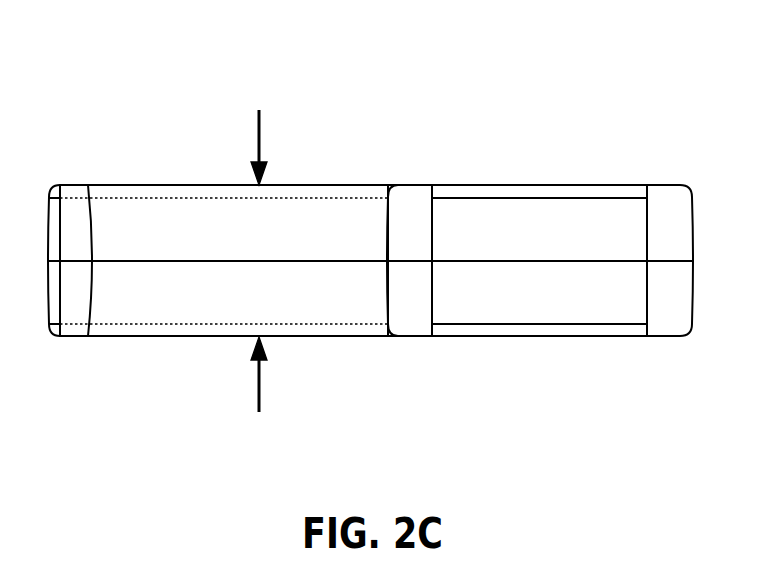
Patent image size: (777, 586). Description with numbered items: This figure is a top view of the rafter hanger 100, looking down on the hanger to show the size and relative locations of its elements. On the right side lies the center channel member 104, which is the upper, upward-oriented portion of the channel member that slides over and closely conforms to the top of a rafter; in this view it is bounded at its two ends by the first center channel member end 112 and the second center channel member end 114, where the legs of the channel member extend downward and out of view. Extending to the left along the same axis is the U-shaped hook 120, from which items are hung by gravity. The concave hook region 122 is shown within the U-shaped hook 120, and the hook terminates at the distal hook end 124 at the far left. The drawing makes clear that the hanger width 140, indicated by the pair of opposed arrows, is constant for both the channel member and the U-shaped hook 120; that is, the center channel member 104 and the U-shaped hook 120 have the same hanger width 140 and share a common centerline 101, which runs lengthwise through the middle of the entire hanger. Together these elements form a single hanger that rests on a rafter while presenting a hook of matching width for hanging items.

The rafter hanger 100 is at (421, 52).
The common centerline 101 is at (458, 262).
The center channel member 104 is at (562, 186).
The first center channel member end 112 is at (410, 185).
The second center channel member end 114 is at (672, 186).
The U-shaped hook 120 is at (223, 185).
The concave hook region 122 is at (319, 240).
The distal hook end 124 is at (69, 336).
The hanger width 140 is at (258, 243).